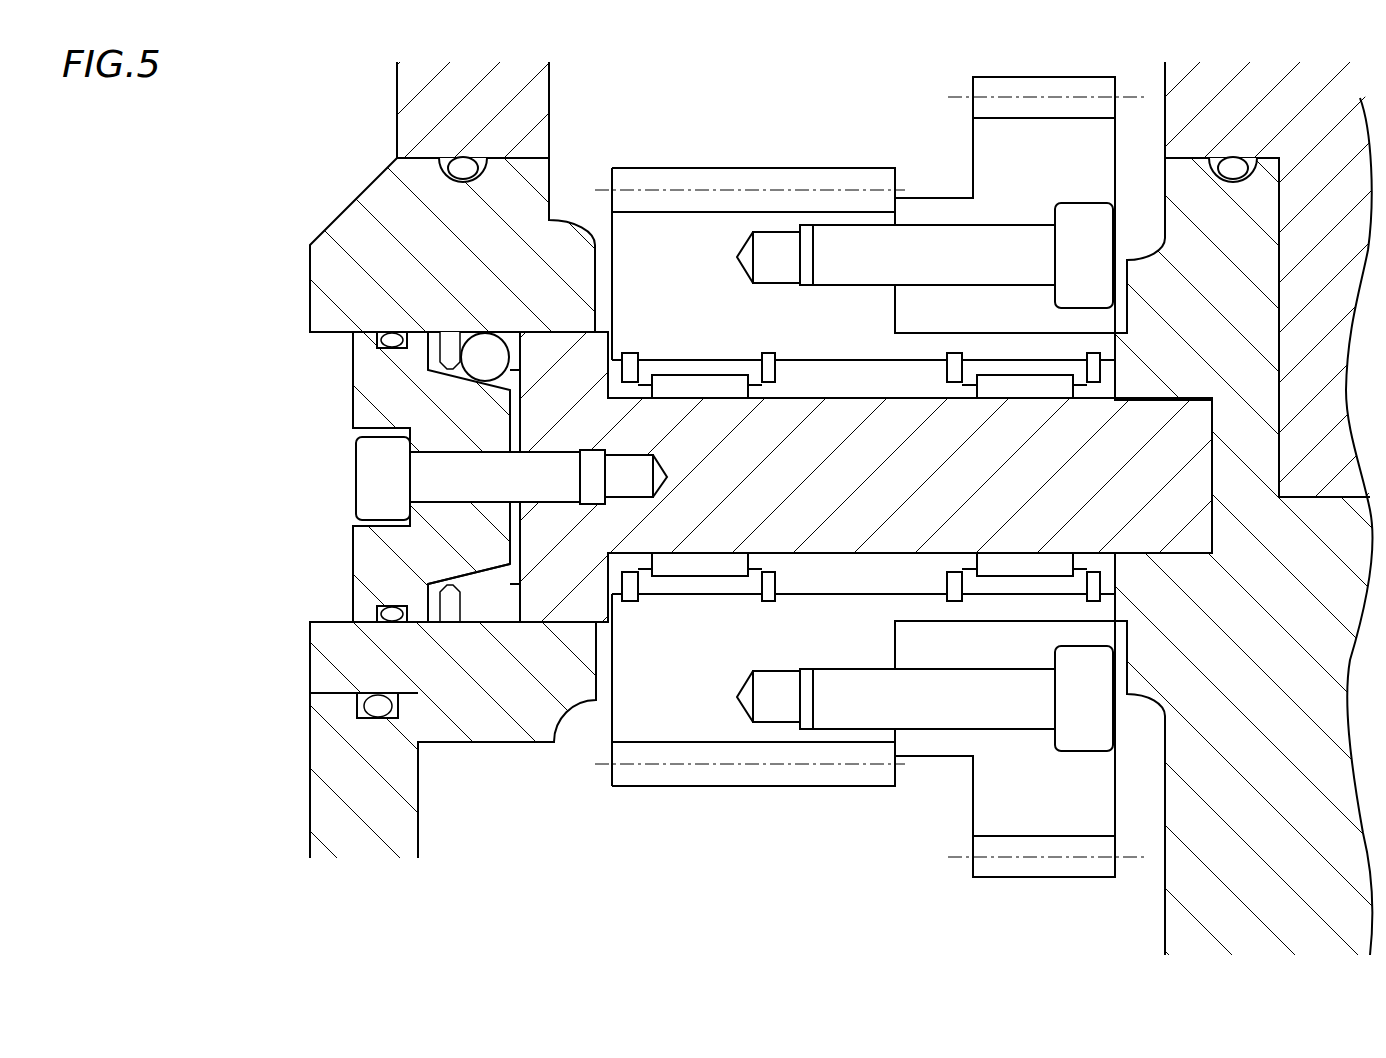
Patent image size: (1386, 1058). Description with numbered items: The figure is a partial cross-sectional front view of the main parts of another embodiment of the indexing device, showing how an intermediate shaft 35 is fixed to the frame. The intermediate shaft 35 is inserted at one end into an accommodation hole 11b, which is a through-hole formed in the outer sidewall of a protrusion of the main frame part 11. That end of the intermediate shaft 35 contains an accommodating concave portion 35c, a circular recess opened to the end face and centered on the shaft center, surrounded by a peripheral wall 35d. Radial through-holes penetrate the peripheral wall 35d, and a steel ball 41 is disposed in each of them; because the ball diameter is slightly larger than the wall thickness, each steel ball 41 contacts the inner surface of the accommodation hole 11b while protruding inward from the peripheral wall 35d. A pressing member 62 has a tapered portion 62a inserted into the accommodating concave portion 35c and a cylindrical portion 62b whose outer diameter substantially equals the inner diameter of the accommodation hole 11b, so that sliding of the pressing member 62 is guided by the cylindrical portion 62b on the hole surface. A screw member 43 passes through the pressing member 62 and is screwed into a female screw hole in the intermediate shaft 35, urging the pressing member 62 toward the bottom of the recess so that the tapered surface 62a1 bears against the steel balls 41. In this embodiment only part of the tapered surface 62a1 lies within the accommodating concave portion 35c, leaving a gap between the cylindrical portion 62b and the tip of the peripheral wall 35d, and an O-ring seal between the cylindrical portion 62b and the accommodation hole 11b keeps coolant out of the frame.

The main frame part 11 is at (309, 665).
The accommodation hole 11b is at (345, 622).
The intermediate shaft 35 is at (843, 396).
The accommodating concave portion 35c is at (487, 348).
The peripheral wall 35d is at (440, 590).
The steel ball 41 is at (395, 205).
The screw member 43 is at (352, 476).
The pressing member 62 is at (351, 392).
The tapered portion 62a is at (560, 560).
The tapered surface 62a1 is at (495, 560).
The cylindrical portion 62b is at (377, 362).